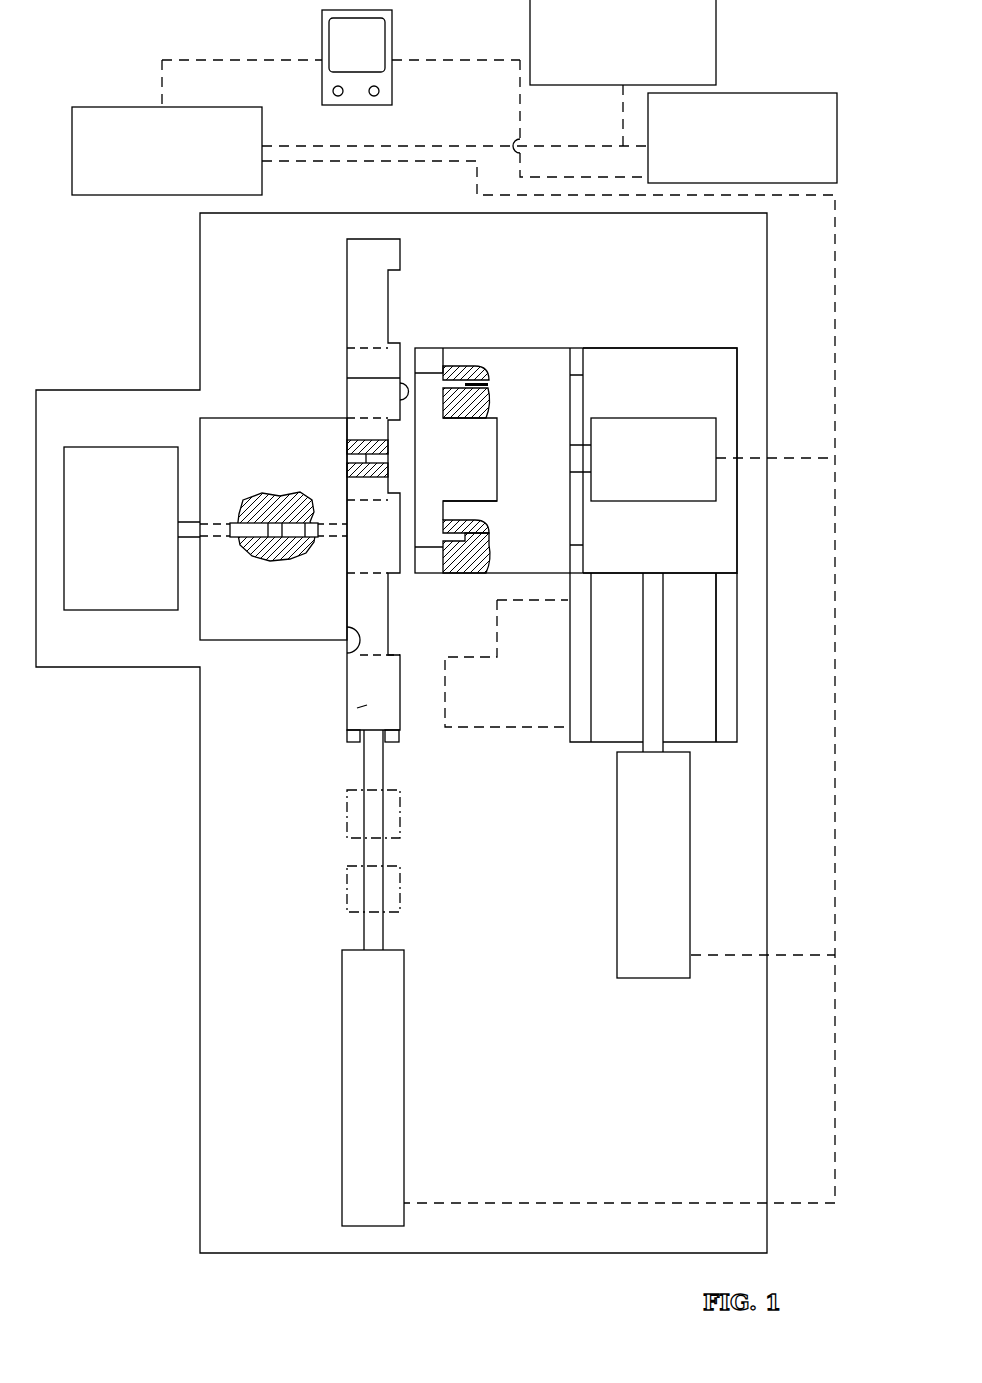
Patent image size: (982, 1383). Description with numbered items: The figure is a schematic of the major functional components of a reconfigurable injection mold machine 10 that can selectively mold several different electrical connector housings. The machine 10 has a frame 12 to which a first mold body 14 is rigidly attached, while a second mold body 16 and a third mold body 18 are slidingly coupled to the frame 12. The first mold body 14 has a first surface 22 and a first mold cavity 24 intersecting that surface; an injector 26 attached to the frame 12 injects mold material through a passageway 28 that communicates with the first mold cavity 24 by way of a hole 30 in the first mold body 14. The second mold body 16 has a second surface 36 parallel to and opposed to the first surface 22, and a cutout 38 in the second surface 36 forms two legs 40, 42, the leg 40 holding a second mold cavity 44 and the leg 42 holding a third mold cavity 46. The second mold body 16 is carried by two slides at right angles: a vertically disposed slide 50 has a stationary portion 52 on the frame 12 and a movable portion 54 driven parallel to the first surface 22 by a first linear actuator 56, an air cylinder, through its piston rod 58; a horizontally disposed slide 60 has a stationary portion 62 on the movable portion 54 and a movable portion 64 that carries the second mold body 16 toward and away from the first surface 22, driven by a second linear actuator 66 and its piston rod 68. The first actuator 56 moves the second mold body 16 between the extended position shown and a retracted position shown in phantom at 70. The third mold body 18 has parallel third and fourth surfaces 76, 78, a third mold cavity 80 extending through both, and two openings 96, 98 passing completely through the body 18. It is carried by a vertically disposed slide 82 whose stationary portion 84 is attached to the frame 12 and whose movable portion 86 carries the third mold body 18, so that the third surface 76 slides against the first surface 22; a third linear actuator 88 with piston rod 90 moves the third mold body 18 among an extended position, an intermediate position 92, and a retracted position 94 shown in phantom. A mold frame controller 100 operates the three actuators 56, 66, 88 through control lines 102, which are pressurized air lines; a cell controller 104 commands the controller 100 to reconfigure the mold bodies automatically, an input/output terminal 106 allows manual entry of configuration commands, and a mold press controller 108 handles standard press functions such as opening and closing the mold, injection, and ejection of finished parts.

The injection mold machine 10 is at (140, 314).
The frame 12 is at (236, 1078).
The first mold body 14 is at (222, 640).
The second mold body 16 is at (543, 346).
The third mold body 18 is at (360, 250).
The first surface 22 is at (347, 660).
The first mold cavity 24 is at (291, 531).
The injector 26 is at (103, 597).
The passageway 28 is at (187, 528).
The hole 30 is at (253, 525).
The second surface 36 is at (435, 350).
The cutout 38 is at (497, 440).
The leg 40 is at (484, 502).
The leg 42 is at (473, 420).
The second mold cavity 44 is at (482, 537).
The third mold cavity 46 is at (490, 384).
The vertically disposed slide 50 is at (577, 750).
The stationary portion 52 is at (703, 728).
The movable portion 54 is at (681, 365).
The first linear actuator 56 is at (655, 923).
The piston rod 58 is at (658, 680).
The horizontally disposed slide 60 is at (470, 340).
The stationary portion 62 is at (577, 355).
The movable portion 64 is at (516, 370).
The second linear actuator 66 is at (640, 487).
The piston rod 68 is at (591, 458).
The retracted position 70 is at (506, 728).
The third surface 76 is at (347, 408).
The fourth surface 78 is at (402, 378).
The third mold cavity 80 is at (352, 462).
The vertically disposed slide 82 is at (336, 747).
The stationary portion 84 is at (400, 738).
The slot 86 is at (347, 707).
The third linear actuator 88 is at (388, 1037).
The piston rod 90 is at (370, 935).
The intermediate position 92 is at (347, 800).
The retracted position 94 is at (347, 908).
The opening 96 is at (372, 552).
The opening 98 is at (347, 357).
The mold frame controller 100 is at (115, 105).
The control lines 102 is at (789, 457).
The cell controller 104 is at (530, 25).
The input/output terminal 106 is at (322, 38).
The mold press controller 108 is at (786, 93).